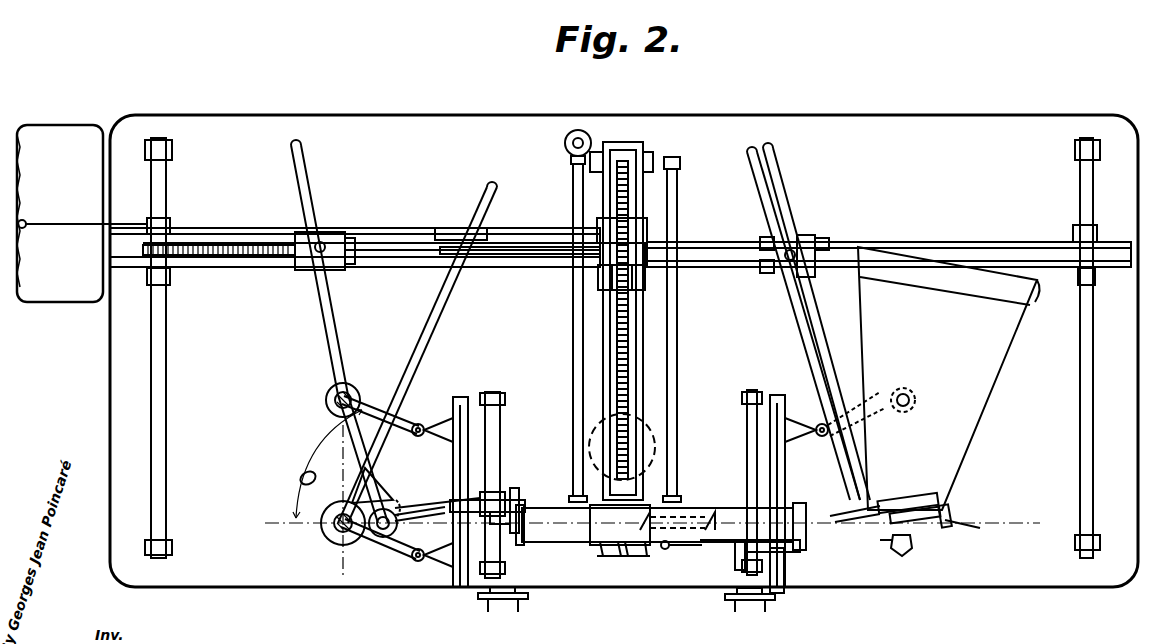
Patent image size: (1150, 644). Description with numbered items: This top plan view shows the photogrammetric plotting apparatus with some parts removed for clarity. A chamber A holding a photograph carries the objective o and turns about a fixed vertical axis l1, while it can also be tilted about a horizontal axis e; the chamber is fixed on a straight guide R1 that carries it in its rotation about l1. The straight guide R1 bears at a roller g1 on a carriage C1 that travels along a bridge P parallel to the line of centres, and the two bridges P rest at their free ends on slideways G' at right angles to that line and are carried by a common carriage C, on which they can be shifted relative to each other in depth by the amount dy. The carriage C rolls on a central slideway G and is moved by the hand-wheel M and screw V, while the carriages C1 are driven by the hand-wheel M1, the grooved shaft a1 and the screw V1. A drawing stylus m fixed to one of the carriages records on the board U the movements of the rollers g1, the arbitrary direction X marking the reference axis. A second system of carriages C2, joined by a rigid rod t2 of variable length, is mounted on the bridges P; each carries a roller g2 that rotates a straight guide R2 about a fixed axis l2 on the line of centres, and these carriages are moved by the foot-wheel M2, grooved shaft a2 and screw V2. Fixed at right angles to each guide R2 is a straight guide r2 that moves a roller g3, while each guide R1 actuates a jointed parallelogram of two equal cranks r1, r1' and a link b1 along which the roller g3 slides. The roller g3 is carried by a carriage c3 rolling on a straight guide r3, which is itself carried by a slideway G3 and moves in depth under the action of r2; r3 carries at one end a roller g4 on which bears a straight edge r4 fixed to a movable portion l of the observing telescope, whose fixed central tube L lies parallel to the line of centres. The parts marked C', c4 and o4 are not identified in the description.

The board U is at (62, 296).
The drawing stylus m is at (79, 213).
The slideway G' is at (622, 348).
The guide block C' is at (622, 221).
The bridge P is at (258, 236).
The screw V2 is at (268, 256).
The roller g2 is at (318, 256).
The carriage C2 is at (335, 238).
The carriage C1 is at (488, 232).
The roller g1 is at (467, 256).
The rigid rod t2 is at (545, 256).
The straight guide R2 is at (296, 158).
The straight guide R1 is at (490, 185).
The central slideway G is at (623, 321).
The screw V is at (630, 378).
The carriage C is at (602, 263).
The horizontal distance in depth dy is at (640, 240).
The grooved shaft a2 is at (575, 340).
The grooved shaft a1 is at (677, 330).
The foot-wheel M2 is at (655, 447).
The chamber A is at (990, 387).
The crank r1' is at (620, 406).
The vertical axis l1 is at (326, 540).
The fixed axis l2 is at (375, 538).
The crank r1 is at (606, 550).
The straight guide r2 is at (428, 518).
The arbitrary direction X is at (656, 514).
The link b1 is at (453, 466).
The slideway G3 is at (500, 424).
The carriage c3 is at (458, 503).
The block c4 is at (493, 492).
The roller g4 is at (520, 502).
The roller g3 is at (488, 518).
The straight guide r3 is at (484, 498).
The straight edge r4 is at (516, 545).
The fixed central tube L is at (590, 540).
The support o4 is at (606, 556).
The screw V1 is at (695, 550).
The hand-wheel M is at (497, 606).
The hand-wheel M1 is at (727, 600).
The horizontal axis e is at (852, 514).
The objective o is at (962, 512).
The movable portion of telescope l is at (900, 556).